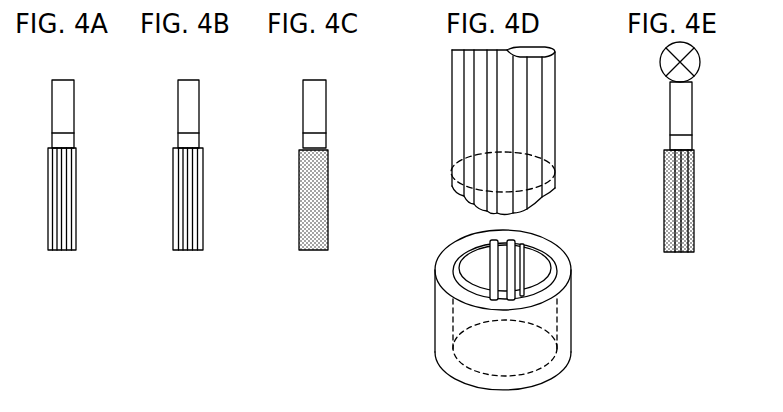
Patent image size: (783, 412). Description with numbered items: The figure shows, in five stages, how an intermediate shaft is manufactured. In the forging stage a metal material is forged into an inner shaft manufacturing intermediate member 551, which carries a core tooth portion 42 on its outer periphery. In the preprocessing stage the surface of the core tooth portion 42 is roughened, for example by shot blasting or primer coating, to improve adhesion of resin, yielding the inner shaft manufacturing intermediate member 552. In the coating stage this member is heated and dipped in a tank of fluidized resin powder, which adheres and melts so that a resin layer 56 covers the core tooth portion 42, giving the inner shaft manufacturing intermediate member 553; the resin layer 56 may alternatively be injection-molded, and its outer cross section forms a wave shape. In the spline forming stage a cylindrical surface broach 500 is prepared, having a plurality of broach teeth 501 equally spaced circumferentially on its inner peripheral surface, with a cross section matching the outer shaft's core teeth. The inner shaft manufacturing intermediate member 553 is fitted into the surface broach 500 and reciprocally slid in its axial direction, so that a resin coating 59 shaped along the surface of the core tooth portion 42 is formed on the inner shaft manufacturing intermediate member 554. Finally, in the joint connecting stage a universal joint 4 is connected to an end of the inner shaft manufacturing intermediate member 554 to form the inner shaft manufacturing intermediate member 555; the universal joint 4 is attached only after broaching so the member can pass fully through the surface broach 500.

In FIG. 4E, the universal joint 4 is at (702, 59).
In FIG. 4A, the core tooth portion 42 is at (76, 203).
In FIG. 4B, the core tooth portion 42 is at (202, 203).
In FIG. 4C, the core tooth portion 42 is at (316, 172).
In FIG. 4C, the resin layer 56 is at (328, 203).
In FIG. 4D, the resin layer 56 is at (564, 130).
In FIG. 4E, the resin coating 59 is at (695, 204).
In FIG. 4D, the surface broach 500 is at (499, 310).
In FIG. 4D, the broach teeth 501 is at (520, 278).
In FIG. 4A, the inner shaft manufacturing intermediate member 551 is at (78, 117).
In FIG. 4B, the inner shaft manufacturing intermediate member 552 is at (204, 117).
In FIG. 4C, the inner shaft manufacturing intermediate member 553 is at (331, 117).
In FIG. 4D, the inner shaft manufacturing intermediate member 554 is at (549, 131).
In FIG. 4E, the inner shaft manufacturing intermediate member 555 is at (697, 119).